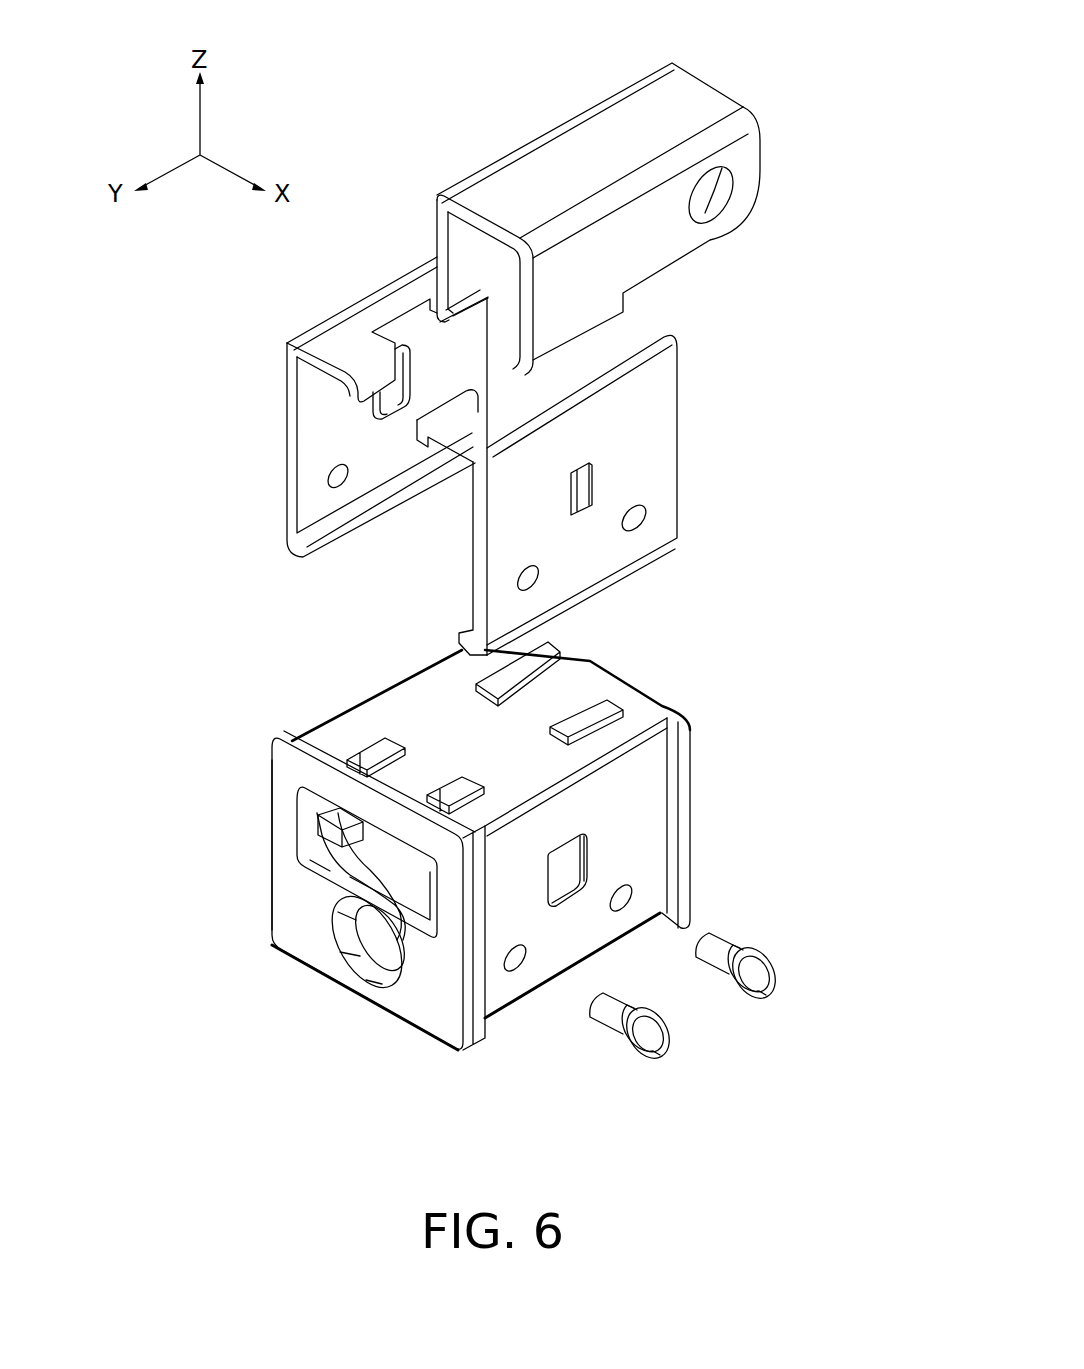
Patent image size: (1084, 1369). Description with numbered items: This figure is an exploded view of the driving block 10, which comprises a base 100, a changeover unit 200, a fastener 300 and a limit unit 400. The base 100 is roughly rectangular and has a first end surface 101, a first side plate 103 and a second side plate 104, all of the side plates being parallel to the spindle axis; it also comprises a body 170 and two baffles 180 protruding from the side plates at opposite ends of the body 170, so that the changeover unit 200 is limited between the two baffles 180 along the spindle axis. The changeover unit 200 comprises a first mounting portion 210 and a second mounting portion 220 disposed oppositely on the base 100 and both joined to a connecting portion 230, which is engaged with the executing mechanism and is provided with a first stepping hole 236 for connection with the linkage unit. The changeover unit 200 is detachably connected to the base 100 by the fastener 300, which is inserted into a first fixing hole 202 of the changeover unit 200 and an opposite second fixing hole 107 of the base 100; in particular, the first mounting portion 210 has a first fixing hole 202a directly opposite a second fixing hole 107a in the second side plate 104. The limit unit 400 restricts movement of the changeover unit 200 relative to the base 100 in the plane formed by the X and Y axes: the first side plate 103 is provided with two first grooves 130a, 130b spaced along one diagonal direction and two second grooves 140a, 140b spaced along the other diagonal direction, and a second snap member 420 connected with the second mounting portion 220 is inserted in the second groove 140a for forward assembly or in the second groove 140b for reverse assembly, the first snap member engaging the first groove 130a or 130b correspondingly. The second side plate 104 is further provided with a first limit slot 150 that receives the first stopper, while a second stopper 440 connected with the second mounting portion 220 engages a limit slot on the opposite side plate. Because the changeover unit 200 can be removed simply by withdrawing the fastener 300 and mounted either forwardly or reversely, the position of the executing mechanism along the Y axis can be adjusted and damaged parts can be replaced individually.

The driving block 10 is at (405, 58).
The base 100 is at (431, 1068).
The first end surface 101 is at (300, 930).
The first side plate 103 is at (458, 668).
The second side plate 104 is at (633, 813).
The second fixing hole 107 is at (521, 978).
The second fixing hole 107a is at (642, 892).
The first groove 130a is at (452, 775).
The first groove 130b is at (537, 665).
The second groove 140a is at (372, 738).
The second groove 140b is at (607, 705).
The first limit slot 150 is at (598, 848).
The body 170 is at (557, 978).
The baffle 180 is at (272, 835).
The changeover unit 200 is at (400, 150).
The first fixing hole 202 is at (350, 486).
The first fixing hole 202a is at (648, 528).
The first mounting portion 210 is at (655, 422).
The second mounting portion 220 is at (346, 302).
The connecting portion 230 is at (595, 107).
The first stepping hole 236 is at (727, 201).
The fastener 300 is at (758, 952).
The limit unit 400 is at (196, 436).
The second snap member 420 is at (346, 394).
The second stopper 440 is at (377, 414).